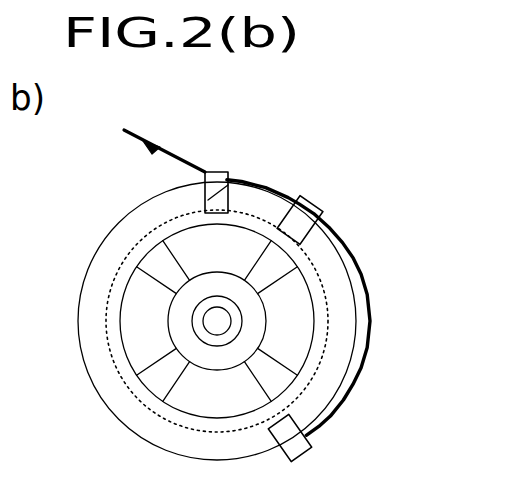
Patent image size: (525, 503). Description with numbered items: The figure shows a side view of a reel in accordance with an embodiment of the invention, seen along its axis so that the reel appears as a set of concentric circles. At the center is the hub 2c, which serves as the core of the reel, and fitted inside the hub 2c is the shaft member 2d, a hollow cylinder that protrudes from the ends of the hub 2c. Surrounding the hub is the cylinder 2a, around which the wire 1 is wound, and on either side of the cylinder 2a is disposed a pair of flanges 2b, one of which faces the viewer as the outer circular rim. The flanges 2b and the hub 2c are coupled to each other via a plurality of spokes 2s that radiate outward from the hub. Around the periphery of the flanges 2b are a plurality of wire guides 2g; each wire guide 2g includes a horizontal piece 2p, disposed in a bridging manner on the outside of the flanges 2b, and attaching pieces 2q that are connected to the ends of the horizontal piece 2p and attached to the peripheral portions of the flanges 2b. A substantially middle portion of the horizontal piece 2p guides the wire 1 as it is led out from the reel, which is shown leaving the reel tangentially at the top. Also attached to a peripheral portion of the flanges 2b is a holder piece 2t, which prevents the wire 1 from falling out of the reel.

The wire 1 is at (362, 282).
The cylinder 2a is at (128, 252).
The flanges 2b is at (147, 223).
The hub 2c is at (193, 302).
The shaft member 2d is at (200, 331).
The spokes 2s is at (269, 363).
The wire guides 2g is at (318, 208).
The horizontal piece 2p is at (217, 174).
The attaching pieces 2q is at (228, 185).
The holder piece 2t is at (292, 441).